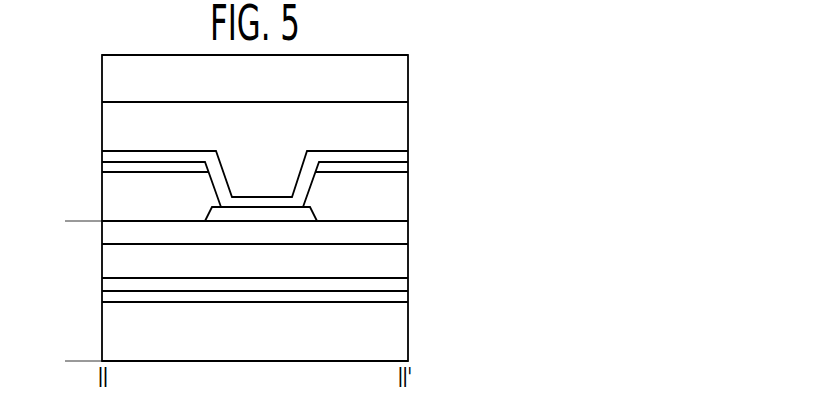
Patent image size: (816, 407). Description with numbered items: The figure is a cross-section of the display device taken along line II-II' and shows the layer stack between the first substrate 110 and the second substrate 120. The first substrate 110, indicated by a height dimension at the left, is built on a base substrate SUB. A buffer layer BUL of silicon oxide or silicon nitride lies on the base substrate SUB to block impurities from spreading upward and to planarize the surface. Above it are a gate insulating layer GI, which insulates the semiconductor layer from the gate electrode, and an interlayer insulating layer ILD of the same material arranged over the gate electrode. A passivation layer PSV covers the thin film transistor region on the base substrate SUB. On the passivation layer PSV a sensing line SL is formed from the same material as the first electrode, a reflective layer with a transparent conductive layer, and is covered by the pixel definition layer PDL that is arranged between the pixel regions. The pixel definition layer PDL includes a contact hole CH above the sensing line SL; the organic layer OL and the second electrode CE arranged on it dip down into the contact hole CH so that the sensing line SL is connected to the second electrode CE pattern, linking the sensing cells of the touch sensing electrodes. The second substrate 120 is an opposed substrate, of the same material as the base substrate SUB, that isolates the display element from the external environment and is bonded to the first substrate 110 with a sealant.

The second substrate 120 is at (400, 82).
The second electrode CE is at (400, 157).
The organic layer OL is at (400, 166).
The pixel definition layer PDL is at (400, 203).
The sensing line SL is at (222, 213).
The contact hole CH is at (262, 188).
The passivation layer PSV is at (400, 231).
The interlayer insulating layer ILD is at (400, 261).
The gate insulating layer GI is at (400, 284).
The buffer layer BUL is at (400, 297).
The base substrate SUB is at (400, 348).
The first substrate 110 is at (77, 229).